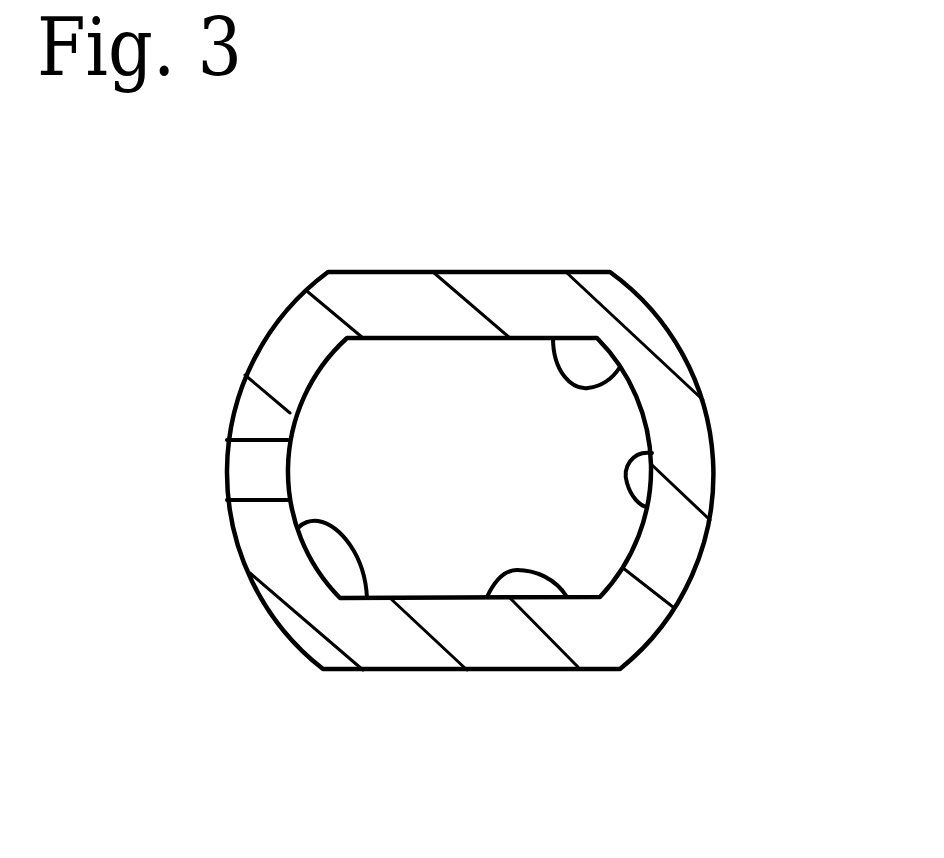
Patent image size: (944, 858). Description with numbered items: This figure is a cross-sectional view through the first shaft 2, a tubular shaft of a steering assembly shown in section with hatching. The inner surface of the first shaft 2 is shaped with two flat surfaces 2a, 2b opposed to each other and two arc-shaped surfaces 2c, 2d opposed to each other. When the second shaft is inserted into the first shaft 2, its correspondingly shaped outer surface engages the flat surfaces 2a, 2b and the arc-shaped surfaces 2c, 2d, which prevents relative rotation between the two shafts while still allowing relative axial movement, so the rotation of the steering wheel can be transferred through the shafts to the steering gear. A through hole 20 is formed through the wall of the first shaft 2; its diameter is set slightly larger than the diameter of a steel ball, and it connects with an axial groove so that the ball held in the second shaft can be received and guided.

The first shaft 2 is at (500, 298).
The flat surface 2a is at (620, 367).
The flat surface 2b is at (578, 598).
The arc-shaped surface 2c is at (648, 513).
The arc-shaped surface 2d is at (364, 582).
The through hole 20 is at (260, 441).